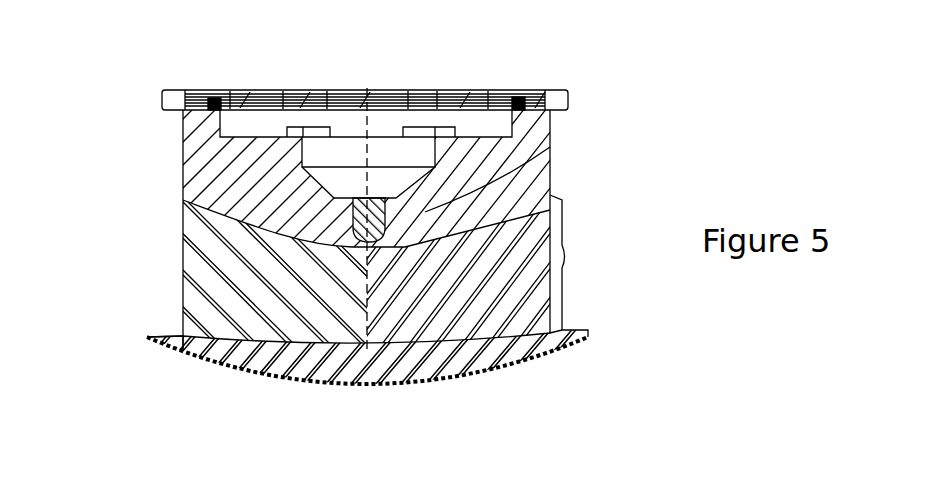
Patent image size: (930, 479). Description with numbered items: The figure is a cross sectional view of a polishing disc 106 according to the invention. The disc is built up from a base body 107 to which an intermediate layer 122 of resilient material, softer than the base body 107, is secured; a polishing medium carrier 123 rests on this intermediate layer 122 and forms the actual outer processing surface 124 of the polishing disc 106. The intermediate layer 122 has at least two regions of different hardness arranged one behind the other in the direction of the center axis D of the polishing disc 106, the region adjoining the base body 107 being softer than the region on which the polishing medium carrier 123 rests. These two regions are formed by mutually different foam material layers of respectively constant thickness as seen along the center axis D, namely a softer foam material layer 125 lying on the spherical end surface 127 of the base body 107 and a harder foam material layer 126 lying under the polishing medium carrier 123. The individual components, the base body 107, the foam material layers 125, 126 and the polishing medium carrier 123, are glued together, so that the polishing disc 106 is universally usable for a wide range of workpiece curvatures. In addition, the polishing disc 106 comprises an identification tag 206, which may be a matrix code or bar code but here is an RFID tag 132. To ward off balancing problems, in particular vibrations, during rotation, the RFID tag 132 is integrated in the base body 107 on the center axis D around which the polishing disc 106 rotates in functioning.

The center axis D is at (380, 116).
The polishing disc 106 is at (171, 238).
The base body 107 is at (551, 166).
The intermediate layer 122 is at (594, 262).
The polishing medium carrier 123 is at (437, 378).
The outer processing surface 124 is at (278, 380).
The softer foam material layer 125 is at (212, 278).
The harder foam material layer 126 is at (183, 333).
The spherical end surface 127 is at (181, 232).
The RFID tag 132 is at (428, 202).
The identification tag 206 is at (416, 218).